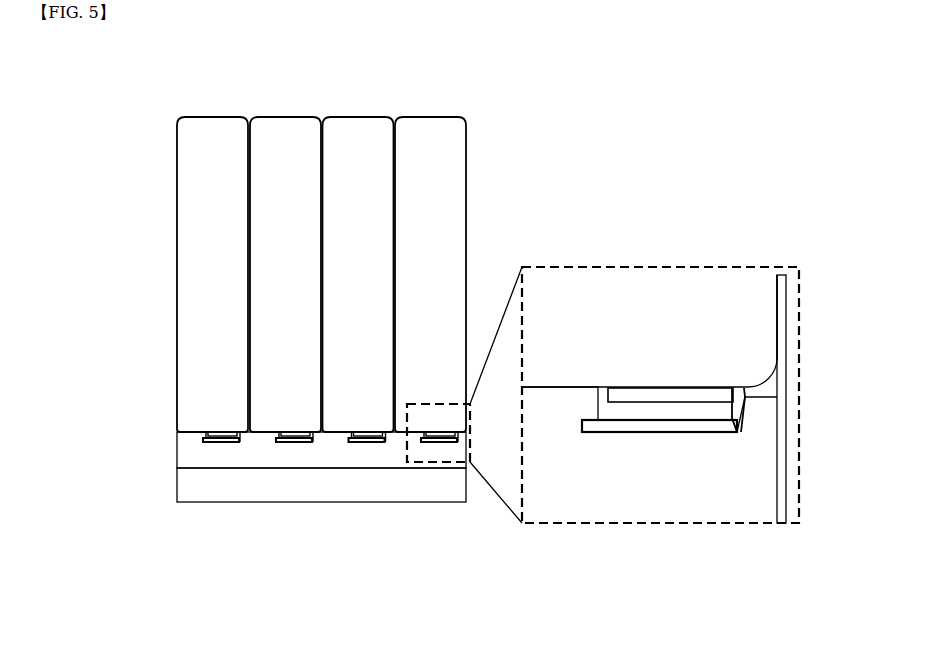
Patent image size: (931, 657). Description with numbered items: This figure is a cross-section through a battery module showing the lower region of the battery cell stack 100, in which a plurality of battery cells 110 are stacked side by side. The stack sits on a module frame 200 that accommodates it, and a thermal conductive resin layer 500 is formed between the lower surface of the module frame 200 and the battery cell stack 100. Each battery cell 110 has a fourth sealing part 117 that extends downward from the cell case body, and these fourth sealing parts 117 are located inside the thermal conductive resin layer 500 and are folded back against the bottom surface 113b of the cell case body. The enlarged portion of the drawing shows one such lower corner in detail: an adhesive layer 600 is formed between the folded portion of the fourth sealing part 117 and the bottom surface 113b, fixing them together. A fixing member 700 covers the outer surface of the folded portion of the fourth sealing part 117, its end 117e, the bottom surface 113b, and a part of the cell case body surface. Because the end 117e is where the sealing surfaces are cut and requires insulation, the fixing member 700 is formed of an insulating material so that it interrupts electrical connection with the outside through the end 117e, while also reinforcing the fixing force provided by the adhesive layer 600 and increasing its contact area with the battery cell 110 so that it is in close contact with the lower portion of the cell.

The battery cell stack 100 is at (210, 128).
The battery cell 110 is at (603, 293).
The bottom surface of the cell case body 113b is at (708, 388).
The fourth sealing part 117 is at (690, 418).
The end of the fourth sealing part 117e is at (743, 395).
The module frame 200 is at (370, 490).
The thermal conductive resin layer 500 is at (235, 453).
The adhesive layer 600 is at (685, 397).
The fixing member 700 is at (767, 393).